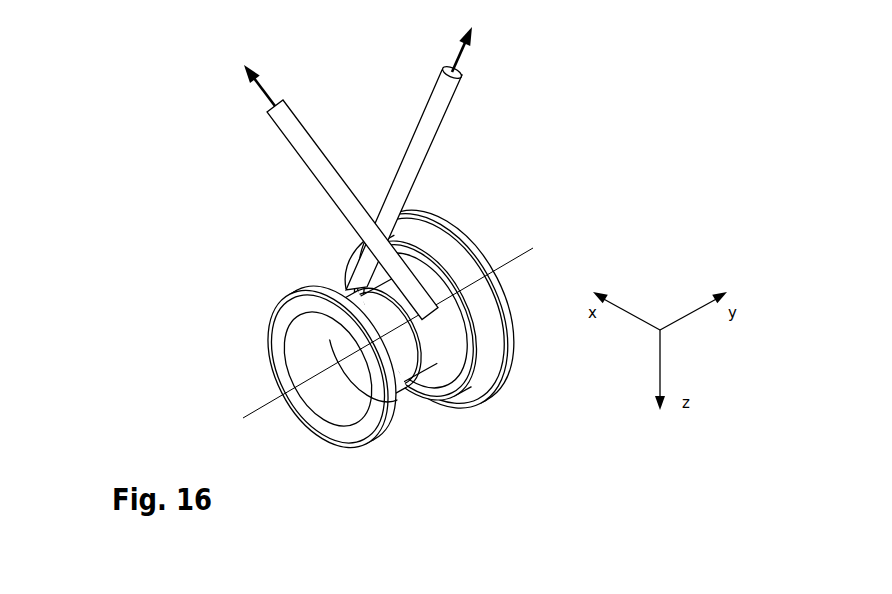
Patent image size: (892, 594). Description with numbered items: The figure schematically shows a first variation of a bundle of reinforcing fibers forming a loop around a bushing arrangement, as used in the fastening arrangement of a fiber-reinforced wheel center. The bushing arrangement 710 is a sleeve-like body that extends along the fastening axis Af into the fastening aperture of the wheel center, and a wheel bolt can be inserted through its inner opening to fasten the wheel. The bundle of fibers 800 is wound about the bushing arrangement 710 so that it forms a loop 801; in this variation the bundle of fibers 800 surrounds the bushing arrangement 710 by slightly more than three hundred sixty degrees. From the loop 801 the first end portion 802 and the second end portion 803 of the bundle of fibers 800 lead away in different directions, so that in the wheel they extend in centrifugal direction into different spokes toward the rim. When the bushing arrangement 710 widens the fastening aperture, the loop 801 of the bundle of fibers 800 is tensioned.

The bushing arrangement 710 is at (304, 333).
The bundle of fibers 800 is at (395, 173).
The loop 801 is at (436, 333).
The first end portion 802 is at (548, 158).
The second end portion 803 is at (288, 127).
The fastening axis Af is at (193, 295).